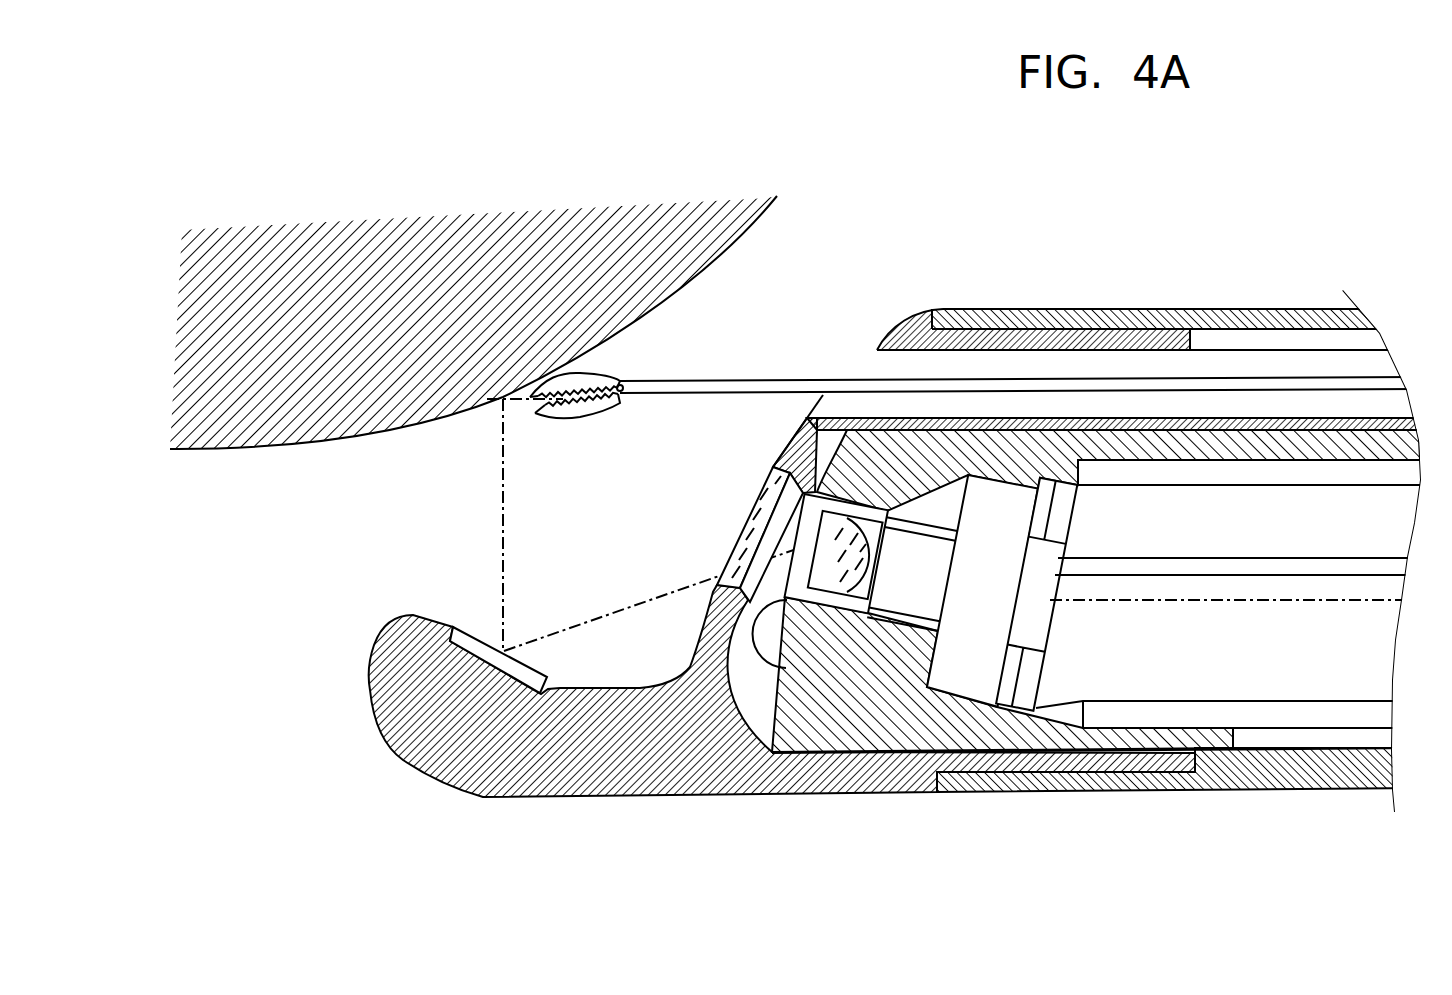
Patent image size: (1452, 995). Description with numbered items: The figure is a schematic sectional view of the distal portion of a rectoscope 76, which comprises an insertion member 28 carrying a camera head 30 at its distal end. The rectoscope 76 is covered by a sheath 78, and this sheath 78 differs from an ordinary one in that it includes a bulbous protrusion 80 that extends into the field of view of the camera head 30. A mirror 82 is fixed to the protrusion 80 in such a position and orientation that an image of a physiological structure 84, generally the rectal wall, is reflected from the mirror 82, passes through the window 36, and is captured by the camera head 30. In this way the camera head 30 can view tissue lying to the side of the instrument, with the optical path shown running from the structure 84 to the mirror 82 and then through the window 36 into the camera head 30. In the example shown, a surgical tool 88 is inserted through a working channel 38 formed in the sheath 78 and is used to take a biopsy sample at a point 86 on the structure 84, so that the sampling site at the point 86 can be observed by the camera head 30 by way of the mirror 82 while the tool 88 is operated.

The insertion member 28 is at (1160, 732).
The camera head 30 is at (815, 722).
The window 36 is at (722, 572).
The working channel 38 is at (1292, 363).
The rectoscope 76 is at (1235, 551).
The sheath 78 is at (1122, 308).
The bulbous protrusion 80 is at (393, 758).
The mirror 82 is at (476, 634).
The physiological structure 84 is at (768, 208).
The point 86 is at (503, 398).
The surgical tool 88 is at (881, 385).